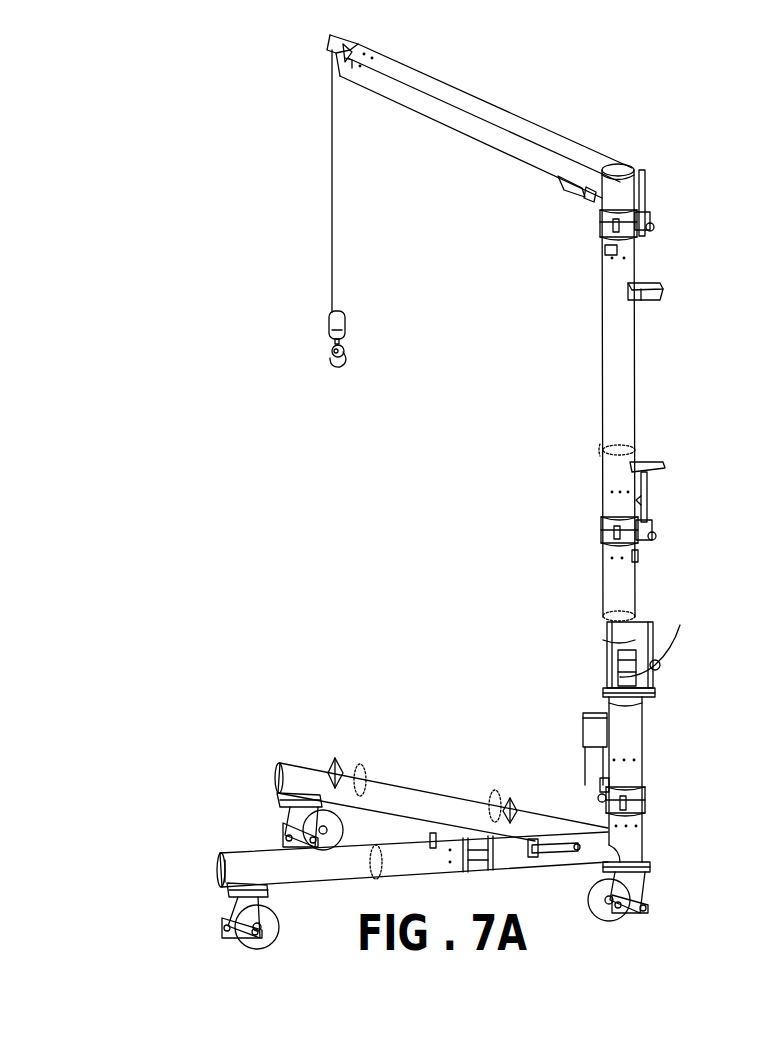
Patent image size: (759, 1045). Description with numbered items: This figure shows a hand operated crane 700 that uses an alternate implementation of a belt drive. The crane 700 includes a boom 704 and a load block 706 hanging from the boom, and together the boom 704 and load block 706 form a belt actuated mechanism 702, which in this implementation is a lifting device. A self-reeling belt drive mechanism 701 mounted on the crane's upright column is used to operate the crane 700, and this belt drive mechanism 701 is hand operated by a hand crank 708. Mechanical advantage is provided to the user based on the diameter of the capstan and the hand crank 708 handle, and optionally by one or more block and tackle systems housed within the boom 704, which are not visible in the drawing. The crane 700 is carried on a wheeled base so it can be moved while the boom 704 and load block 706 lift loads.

The hand operated crane 700 is at (234, 244).
The belt drive mechanism 701 is at (575, 648).
The belt actuated mechanism 702 is at (543, 331).
The boom 704 is at (552, 138).
The load block 706 is at (323, 345).
The hand crank 708 is at (634, 672).